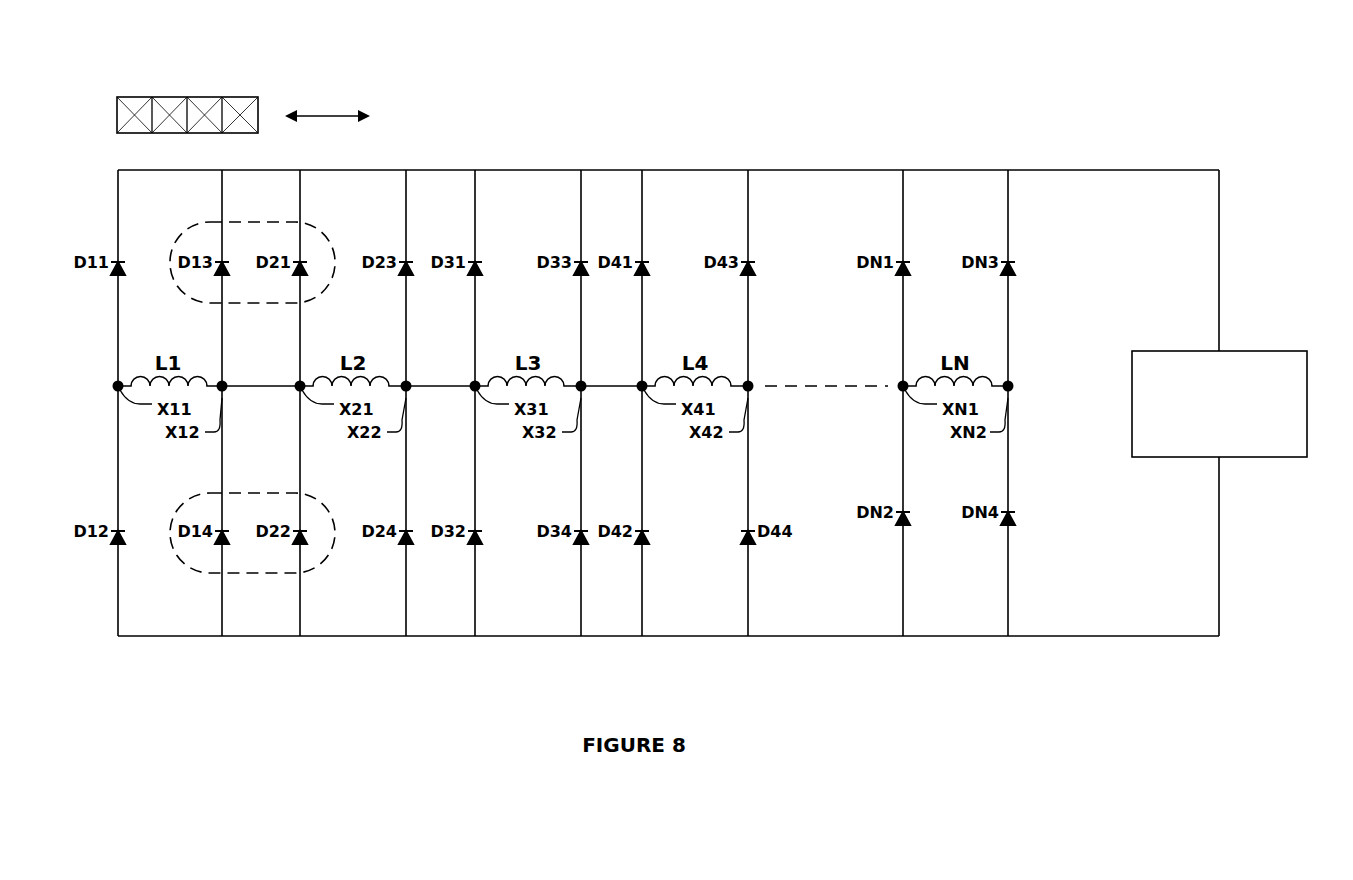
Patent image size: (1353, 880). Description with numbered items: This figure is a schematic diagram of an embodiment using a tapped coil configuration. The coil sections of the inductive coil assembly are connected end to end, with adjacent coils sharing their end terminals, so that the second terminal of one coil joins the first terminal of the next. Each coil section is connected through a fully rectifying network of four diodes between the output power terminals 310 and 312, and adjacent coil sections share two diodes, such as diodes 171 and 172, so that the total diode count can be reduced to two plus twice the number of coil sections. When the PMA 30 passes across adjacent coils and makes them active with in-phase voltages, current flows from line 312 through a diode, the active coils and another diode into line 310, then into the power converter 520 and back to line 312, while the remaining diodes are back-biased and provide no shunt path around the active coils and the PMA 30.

The PMA 30 is at (137, 97).
The shared diode 171 is at (303, 225).
The shared diode 172 is at (307, 494).
The output power terminal 310 is at (1132, 170).
The output power terminal 312 is at (1113, 636).
The power converter 520 is at (1248, 351).